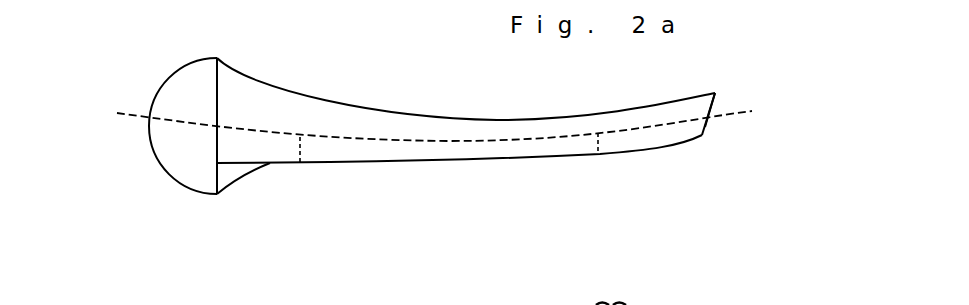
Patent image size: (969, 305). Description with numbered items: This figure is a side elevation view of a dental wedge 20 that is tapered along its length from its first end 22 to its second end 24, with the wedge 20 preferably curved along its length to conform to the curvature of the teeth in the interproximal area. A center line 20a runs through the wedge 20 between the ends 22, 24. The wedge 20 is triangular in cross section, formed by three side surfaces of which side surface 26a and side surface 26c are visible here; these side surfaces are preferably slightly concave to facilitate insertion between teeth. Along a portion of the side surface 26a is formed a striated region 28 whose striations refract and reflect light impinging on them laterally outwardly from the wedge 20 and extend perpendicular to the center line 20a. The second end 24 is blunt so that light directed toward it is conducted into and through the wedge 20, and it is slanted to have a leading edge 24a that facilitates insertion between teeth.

The wedge 20 is at (454, 118).
The center line 20a is at (128, 113).
The first end 22 is at (175, 155).
The second end 24 is at (702, 136).
The leading edge 24a is at (712, 103).
The side surface 26a is at (265, 112).
The side surface 26c is at (285, 162).
The striated region 28 is at (420, 152).